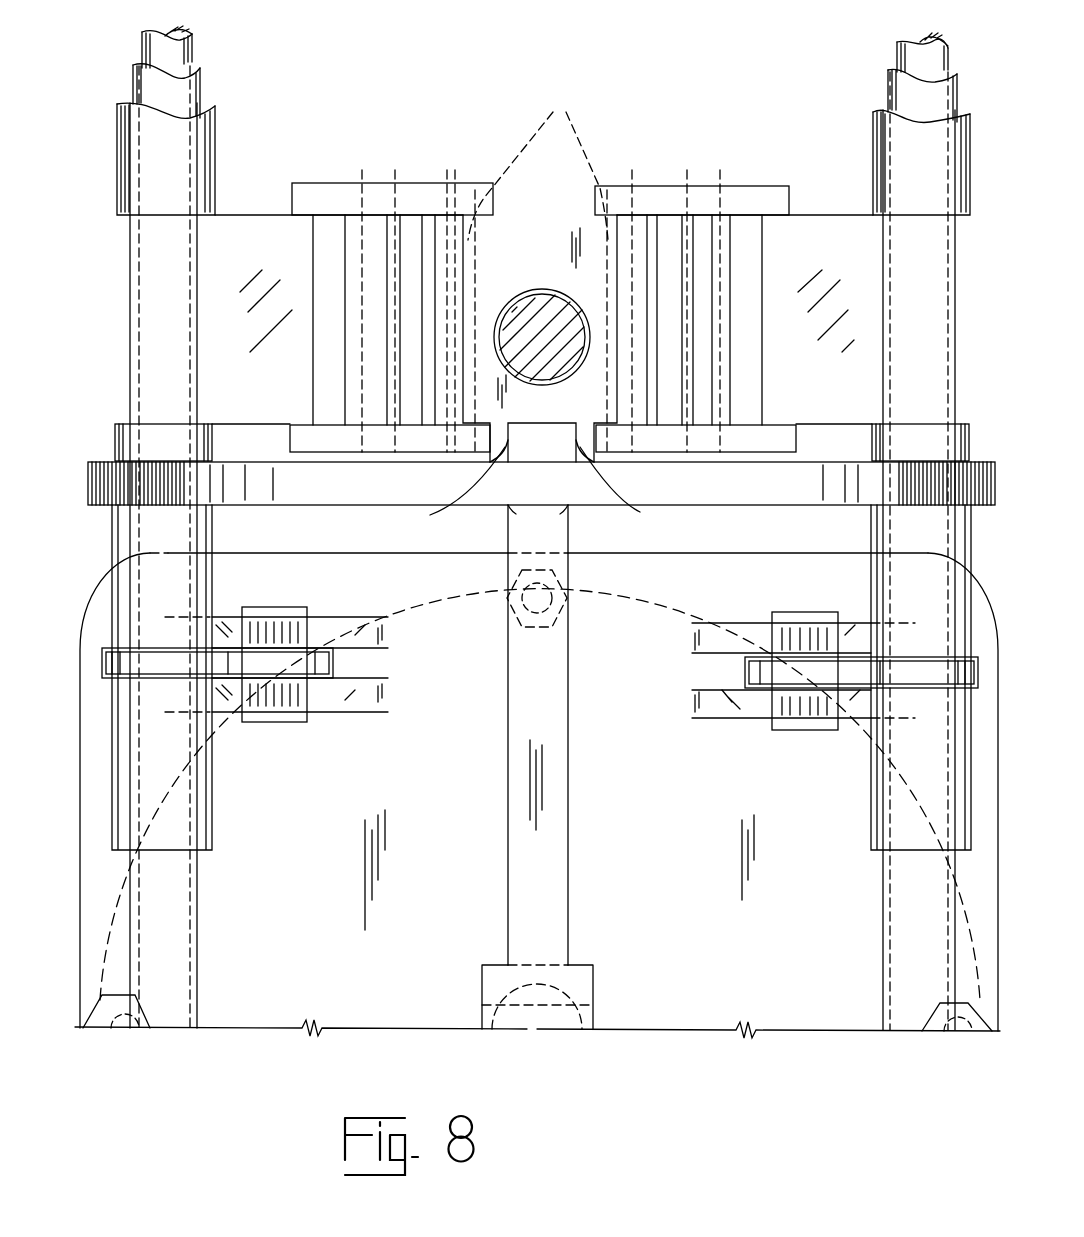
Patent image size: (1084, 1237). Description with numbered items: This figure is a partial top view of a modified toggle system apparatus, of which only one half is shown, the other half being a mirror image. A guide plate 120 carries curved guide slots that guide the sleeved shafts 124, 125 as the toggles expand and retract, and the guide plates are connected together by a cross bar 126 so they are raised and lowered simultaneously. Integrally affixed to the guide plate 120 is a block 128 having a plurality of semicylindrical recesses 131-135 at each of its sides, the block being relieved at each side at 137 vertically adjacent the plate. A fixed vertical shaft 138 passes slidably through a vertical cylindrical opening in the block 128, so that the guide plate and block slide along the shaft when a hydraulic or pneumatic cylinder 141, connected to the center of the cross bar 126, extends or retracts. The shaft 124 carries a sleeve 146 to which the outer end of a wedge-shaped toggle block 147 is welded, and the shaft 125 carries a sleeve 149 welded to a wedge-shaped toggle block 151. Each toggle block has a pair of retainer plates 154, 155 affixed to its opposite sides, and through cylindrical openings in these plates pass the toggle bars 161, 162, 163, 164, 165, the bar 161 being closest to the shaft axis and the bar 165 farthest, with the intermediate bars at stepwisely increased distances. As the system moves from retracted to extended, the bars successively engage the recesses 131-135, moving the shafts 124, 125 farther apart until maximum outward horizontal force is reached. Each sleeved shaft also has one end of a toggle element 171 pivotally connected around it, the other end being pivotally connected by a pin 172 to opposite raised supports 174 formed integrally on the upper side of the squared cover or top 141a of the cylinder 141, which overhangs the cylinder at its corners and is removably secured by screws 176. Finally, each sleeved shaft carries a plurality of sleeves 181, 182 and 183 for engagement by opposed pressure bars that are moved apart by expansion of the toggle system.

The sleeved shaft 124 is at (194, 49).
The sleeved shaft 125 is at (897, 52).
The sleeve 146 is at (205, 83).
The sleeve 149 is at (888, 89).
The sleeve 183 is at (215, 126).
The wedge-shaped toggle block 147 is at (222, 215).
The wedge-shaped toggle block 151 is at (860, 215).
The retainer plate 155 is at (292, 193).
The toggle bar 161 is at (315, 183).
The toggle bar 162 is at (548, 302).
The toggle bar 163 is at (398, 183).
The toggle bar 164 is at (440, 183).
The toggle bar 165 is at (472, 183).
The semicylindrical recesses 131-135 is at (538, 163).
The vertical shaft 138 is at (541, 290).
The block 128 is at (538, 216).
The retainer plate 154 is at (290, 444).
The guide plate 120 is at (303, 506).
The relief 137 is at (533, 488).
The hydraulic or pneumatic cylinder 141 is at (605, 590).
The cover or top 141a is at (716, 553).
The screw 176 is at (514, 582).
The sleeve 182 is at (212, 540).
The sleeve 181 is at (212, 783).
The pin 172 is at (277, 607).
The raised support 174 is at (345, 617).
The toggle element 171 is at (334, 664).
The cross bar 126 is at (508, 671).